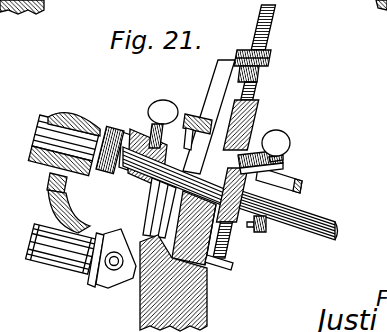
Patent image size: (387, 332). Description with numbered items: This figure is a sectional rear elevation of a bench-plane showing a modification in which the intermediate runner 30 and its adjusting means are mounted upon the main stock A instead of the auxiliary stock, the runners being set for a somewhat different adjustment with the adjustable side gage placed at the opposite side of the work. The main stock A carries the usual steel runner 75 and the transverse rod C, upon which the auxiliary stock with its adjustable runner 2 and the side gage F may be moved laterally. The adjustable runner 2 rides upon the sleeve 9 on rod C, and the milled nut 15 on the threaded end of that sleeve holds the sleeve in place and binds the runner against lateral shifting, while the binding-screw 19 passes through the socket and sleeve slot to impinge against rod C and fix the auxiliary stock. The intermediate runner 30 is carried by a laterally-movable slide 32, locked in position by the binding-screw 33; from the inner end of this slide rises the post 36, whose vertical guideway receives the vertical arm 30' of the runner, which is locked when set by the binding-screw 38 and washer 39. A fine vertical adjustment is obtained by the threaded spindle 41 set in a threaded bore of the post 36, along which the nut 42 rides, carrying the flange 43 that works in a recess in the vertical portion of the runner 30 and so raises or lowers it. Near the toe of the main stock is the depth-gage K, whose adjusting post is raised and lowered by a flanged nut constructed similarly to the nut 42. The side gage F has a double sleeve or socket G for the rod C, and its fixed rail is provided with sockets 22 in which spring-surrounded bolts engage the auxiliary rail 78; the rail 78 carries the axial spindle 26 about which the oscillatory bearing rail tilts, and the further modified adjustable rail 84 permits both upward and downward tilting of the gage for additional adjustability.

The threaded rod or spindle 41 is at (271, 29).
The nut 42 is at (268, 60).
The flange 43 is at (258, 79).
The post or bracket 36 is at (250, 112).
The vertical arm of the intermediate runner 30' is at (209, 116).
The binding-screw 19 is at (163, 100).
The binding-screw 38 is at (196, 114).
The milled nut 15 is at (115, 128).
The sleeve 9 is at (122, 173).
The washer 39 is at (251, 152).
The binding-screw 33 is at (283, 137).
The laterally-movable slide 32 is at (293, 180).
The transversely-arranged rod or pin C is at (308, 210).
The main stock A is at (222, 204).
The adjustable blade or runner 2 is at (147, 214).
The intermediate blade or runner 30 is at (186, 228).
The steel blade or runner 75 is at (207, 255).
The depth-gage or stop K is at (228, 252).
The rod or spindle 26 is at (113, 252).
The socket 22 is at (61, 249).
The auxiliary rail 78 is at (99, 282).
The adjustable rail 84 is at (135, 270).
The adjustable gage F is at (64, 201).
The double sleeve or socket G is at (66, 127).